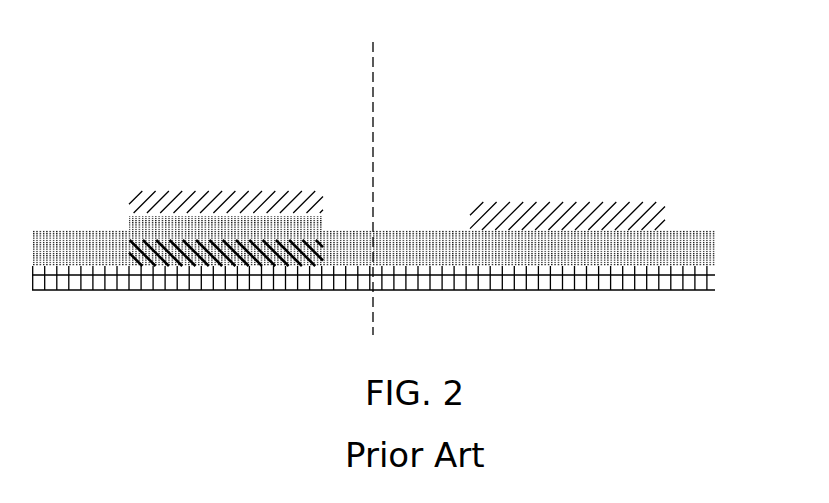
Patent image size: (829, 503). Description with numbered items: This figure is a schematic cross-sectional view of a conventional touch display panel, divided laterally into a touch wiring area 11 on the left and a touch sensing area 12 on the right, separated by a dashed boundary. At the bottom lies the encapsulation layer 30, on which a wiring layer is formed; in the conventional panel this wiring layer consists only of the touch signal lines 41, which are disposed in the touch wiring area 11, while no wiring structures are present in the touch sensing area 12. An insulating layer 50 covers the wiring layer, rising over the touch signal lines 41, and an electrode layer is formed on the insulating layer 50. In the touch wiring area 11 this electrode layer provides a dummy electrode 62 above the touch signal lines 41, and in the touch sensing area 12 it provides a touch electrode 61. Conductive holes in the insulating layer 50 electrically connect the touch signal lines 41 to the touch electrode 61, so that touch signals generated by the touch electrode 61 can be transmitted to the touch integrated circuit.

The touch wiring area 11 is at (247, 53).
The touch sensing area 12 is at (540, 52).
The encapsulation layer 30 is at (715, 280).
The touch signal line 41 is at (220, 258).
The insulating layer 50 is at (715, 251).
The touch electrode 61 is at (568, 203).
The dummy electrode 62 is at (225, 192).